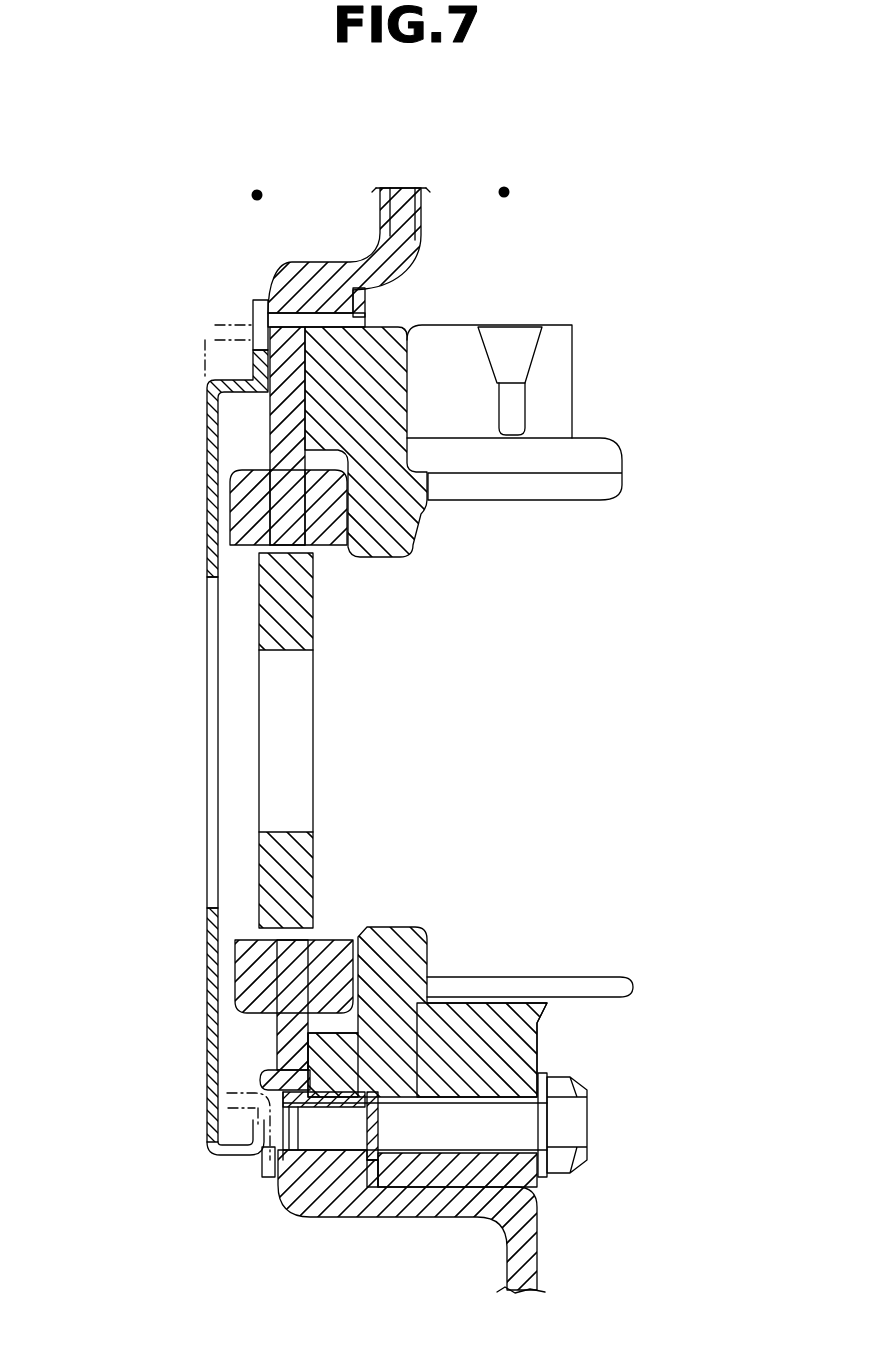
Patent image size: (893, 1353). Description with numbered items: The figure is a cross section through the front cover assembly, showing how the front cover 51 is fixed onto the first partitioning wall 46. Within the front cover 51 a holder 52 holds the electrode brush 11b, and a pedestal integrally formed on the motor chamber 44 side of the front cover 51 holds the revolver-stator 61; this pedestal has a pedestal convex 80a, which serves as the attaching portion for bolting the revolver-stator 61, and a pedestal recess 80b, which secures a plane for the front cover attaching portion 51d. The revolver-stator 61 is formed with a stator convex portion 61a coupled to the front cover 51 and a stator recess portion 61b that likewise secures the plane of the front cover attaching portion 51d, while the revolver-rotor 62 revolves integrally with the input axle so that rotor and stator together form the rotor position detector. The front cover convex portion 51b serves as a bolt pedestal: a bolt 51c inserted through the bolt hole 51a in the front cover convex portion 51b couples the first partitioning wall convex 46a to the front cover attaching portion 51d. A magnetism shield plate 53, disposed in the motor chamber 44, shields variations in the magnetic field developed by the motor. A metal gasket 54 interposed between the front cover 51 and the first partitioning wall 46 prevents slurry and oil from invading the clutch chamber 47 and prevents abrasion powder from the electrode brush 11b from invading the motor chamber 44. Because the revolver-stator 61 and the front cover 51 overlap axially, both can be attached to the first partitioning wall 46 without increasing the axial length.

The motor chamber 44 is at (257, 195).
The clutch chamber 47 is at (504, 192).
The metal gasket 54 is at (397, 300).
The electrode brush 11b is at (505, 345).
The holder 52 is at (548, 390).
The pedestal convex 80a is at (315, 390).
The stator convex portion 61a is at (280, 418).
The revolver-stator 61 is at (247, 507).
The revolver-rotor 62 is at (280, 610).
The front cover 51 is at (393, 938).
The pedestal recess 80b is at (327, 1067).
The front cover convex portion 51b is at (520, 1032).
The bolt hole 51a is at (515, 1122).
The bolt 51c is at (578, 1133).
The front cover attaching portion 51d is at (372, 1100).
The stator recess portion 61b is at (293, 1062).
The magnetism shield plate 53 is at (217, 1118).
The first partitioning wall convex 46a is at (398, 1108).
The first partitioning wall 46 is at (530, 1268).